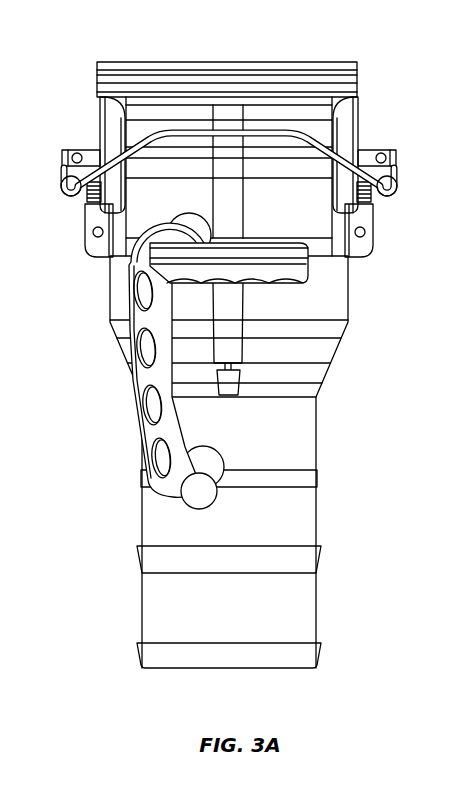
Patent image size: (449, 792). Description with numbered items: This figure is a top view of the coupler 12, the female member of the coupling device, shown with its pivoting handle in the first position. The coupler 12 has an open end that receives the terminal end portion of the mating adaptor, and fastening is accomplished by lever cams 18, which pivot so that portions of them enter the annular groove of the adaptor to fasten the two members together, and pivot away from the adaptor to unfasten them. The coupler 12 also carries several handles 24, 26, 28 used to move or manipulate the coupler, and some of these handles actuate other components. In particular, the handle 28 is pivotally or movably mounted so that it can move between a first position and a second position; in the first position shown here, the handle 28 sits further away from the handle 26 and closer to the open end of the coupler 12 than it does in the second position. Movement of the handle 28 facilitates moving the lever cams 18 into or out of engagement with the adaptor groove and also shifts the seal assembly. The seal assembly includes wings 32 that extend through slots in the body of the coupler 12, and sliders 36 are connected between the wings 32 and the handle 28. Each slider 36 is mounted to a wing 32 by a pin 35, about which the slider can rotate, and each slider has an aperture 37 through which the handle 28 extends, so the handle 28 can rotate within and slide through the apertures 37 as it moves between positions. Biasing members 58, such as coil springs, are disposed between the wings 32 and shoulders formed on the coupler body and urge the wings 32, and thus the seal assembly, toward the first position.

The coupler 12 is at (68, 512).
The lever cams 18 is at (98, 106).
The handle 24 is at (136, 408).
The handle 26 is at (309, 270).
The handle 28 is at (268, 130).
The wings 32 is at (68, 152).
The pin 35 is at (63, 164).
The sliders 36 is at (62, 192).
The aperture 37 is at (86, 204).
The biasing members 58 is at (86, 215).